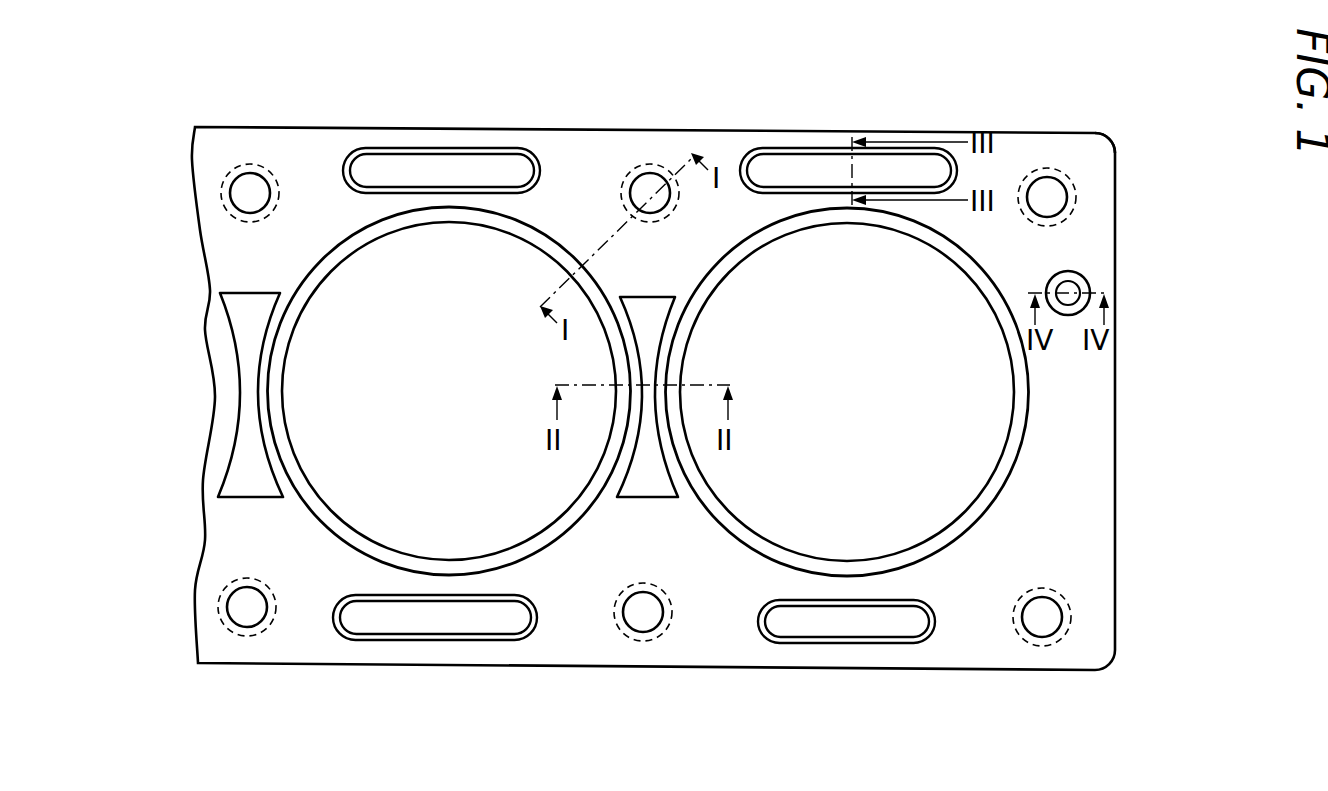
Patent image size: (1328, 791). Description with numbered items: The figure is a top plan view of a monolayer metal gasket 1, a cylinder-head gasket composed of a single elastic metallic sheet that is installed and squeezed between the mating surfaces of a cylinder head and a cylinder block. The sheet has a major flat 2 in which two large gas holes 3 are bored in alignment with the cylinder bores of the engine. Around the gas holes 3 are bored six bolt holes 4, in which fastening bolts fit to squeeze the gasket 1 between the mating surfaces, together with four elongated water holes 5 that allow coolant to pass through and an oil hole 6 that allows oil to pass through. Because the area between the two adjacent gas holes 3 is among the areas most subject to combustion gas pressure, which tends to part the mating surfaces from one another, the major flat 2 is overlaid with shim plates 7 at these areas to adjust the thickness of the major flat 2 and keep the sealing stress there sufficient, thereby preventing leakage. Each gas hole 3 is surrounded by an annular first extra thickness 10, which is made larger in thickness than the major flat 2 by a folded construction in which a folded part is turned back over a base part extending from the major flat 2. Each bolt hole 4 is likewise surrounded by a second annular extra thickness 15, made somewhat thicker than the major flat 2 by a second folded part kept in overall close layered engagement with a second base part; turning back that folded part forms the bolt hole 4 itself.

The monolayer metal gasket 1 is at (1133, 150).
The major flat 2 is at (571, 185).
The gas hole 3 is at (453, 373).
The bolt hole 4 is at (245, 190).
The water hole 5 is at (457, 170).
The oil hole 6 is at (1052, 283).
The shim plate 7 is at (243, 318).
The first extra thickness 10 is at (342, 530).
The second extra thickness 15 is at (272, 172).